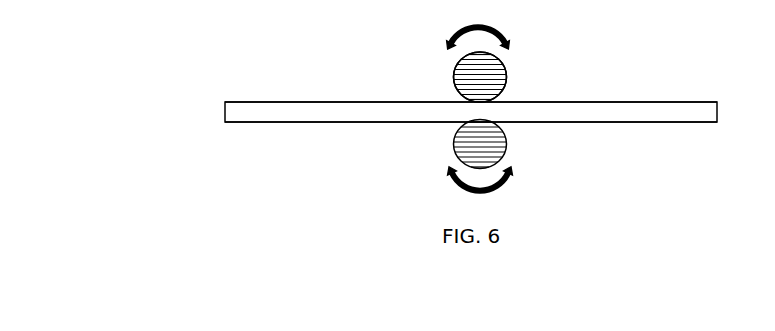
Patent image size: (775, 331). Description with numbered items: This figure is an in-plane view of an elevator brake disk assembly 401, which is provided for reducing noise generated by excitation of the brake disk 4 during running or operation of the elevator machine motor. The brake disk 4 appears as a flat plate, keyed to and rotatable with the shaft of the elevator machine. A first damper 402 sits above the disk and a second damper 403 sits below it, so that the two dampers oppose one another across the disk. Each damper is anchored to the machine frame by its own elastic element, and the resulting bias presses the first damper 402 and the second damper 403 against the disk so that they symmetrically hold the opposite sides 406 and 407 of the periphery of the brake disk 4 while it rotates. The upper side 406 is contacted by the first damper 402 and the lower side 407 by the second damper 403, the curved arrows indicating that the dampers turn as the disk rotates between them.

The brake disk 4 is at (673, 113).
The elevator brake disk assembly 401 is at (505, 64).
The first damper 402 is at (454, 76).
The second damper 403 is at (454, 146).
The opposite side of the periphery 406 is at (265, 102).
The opposite side of the periphery 407 is at (267, 121).